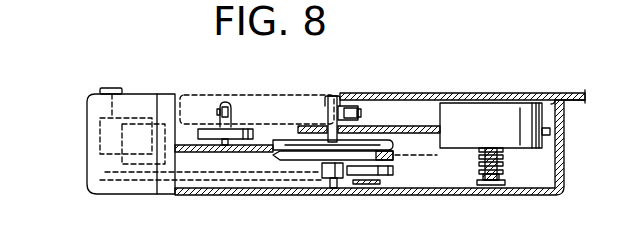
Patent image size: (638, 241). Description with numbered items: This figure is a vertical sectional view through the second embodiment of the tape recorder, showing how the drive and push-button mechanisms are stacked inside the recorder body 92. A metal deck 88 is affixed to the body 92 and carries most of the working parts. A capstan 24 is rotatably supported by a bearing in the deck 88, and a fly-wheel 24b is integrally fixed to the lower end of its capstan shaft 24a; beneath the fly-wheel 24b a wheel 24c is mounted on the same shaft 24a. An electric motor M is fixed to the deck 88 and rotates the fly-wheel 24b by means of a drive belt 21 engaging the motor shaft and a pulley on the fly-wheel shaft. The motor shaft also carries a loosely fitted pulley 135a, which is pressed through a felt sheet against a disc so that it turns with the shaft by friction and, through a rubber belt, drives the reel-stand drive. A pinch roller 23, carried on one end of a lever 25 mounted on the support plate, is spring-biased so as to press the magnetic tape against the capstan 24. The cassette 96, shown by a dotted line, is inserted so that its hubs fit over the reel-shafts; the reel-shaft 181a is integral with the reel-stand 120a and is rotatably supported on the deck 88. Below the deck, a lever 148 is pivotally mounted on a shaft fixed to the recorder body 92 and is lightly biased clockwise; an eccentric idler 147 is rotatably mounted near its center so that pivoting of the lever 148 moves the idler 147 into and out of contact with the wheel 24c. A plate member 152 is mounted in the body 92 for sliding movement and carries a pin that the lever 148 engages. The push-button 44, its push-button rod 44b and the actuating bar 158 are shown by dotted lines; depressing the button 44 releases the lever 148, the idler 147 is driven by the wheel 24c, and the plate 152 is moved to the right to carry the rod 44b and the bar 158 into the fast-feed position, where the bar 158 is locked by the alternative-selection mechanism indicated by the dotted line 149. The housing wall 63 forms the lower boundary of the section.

The push-button 44 is at (108, 88).
The push-button rod 44b is at (111, 105).
The alternative-selection mechanism 149 is at (134, 124).
The actuating bar 158 is at (100, 143).
The plate member 152 is at (135, 175).
The bottom wall 63 is at (211, 187).
The recorder body 92 is at (249, 195).
The cassette 96 is at (239, 95).
The reel-shaft 181a is at (221, 102).
The reel-stand 120a is at (238, 129).
The metal deck 88 is at (412, 126).
The capstan 24 is at (331, 96).
The capstan shaft 24a is at (326, 127).
The fly-wheel 24b is at (395, 148).
The wheel 24c is at (321, 173).
The pinch roller 23 is at (359, 106).
The electric motor M is at (442, 103).
The eccentric idler 147 is at (394, 176).
The lever 148 is at (362, 184).
The drive belt 21 is at (428, 157).
The lever 25 is at (503, 149).
The pulley 135a is at (503, 169).